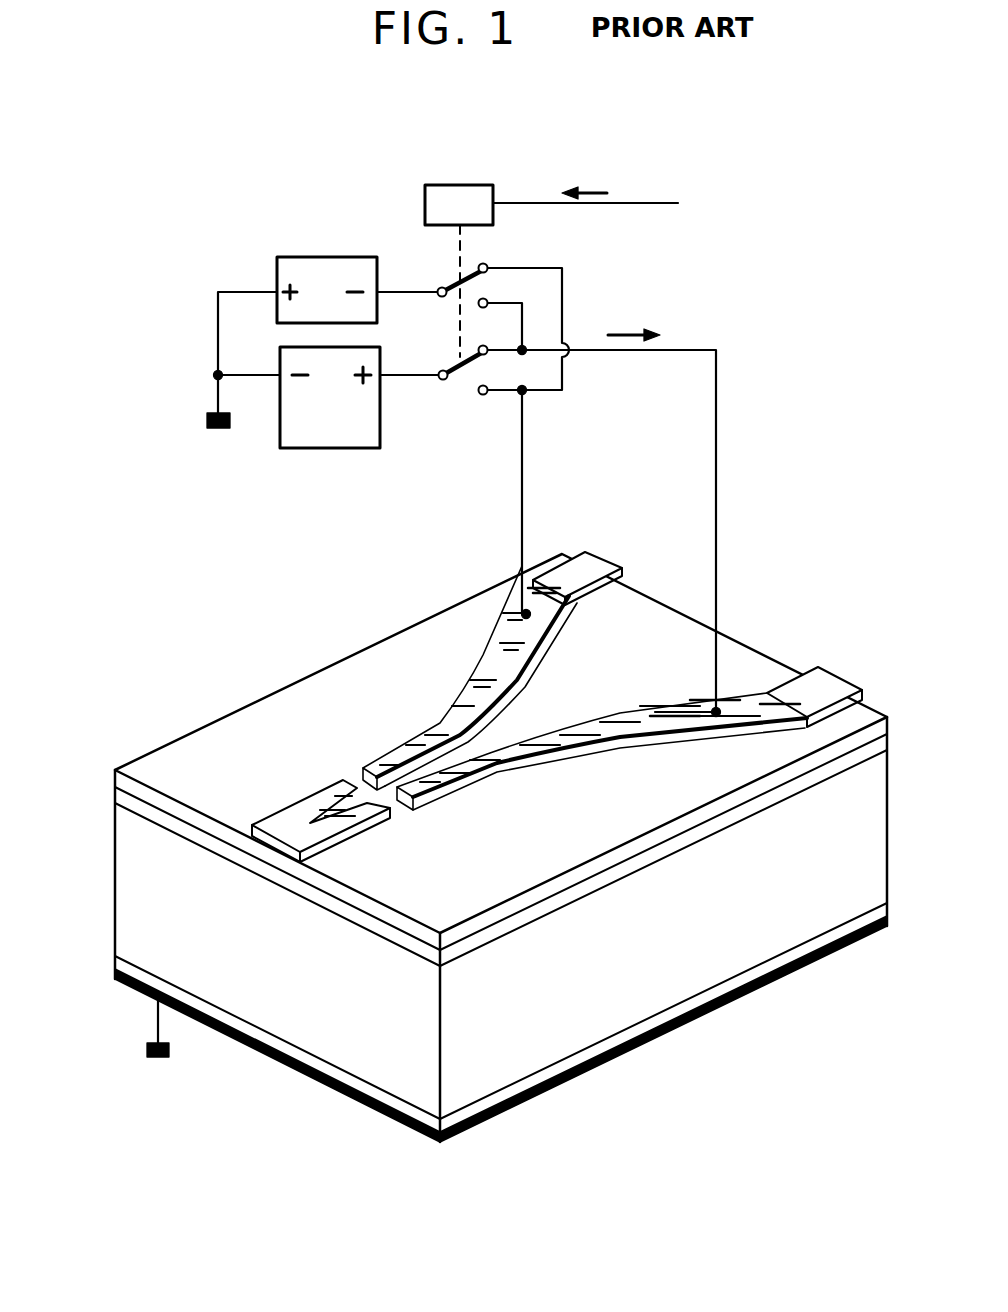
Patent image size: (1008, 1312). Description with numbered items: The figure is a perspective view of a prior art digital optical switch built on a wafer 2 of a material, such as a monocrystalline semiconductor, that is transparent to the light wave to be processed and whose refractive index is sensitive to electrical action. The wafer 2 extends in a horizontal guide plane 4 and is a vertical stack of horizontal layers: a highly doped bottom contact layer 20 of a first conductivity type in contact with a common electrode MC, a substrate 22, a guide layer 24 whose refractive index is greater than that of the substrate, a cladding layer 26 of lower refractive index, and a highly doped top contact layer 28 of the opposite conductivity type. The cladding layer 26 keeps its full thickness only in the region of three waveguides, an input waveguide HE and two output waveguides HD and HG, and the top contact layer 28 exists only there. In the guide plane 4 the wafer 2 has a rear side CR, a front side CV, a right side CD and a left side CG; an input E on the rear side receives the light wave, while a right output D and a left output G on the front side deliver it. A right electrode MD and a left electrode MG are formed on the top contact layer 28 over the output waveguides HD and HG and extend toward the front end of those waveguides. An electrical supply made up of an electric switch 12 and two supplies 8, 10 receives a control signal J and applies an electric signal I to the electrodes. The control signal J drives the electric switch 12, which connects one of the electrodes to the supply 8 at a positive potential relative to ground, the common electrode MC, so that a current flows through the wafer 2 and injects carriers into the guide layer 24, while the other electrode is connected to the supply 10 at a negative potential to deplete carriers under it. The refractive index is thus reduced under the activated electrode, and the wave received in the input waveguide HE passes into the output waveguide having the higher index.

The wafer 2 is at (113, 840).
The guide plane 4 is at (198, 758).
The supply 8 is at (320, 433).
The supply 10 is at (328, 270).
The electric switch 12 is at (463, 195).
The bottom contact layer 20 is at (660, 1027).
The substrate 22 is at (713, 950).
The guide layer 24 is at (525, 918).
The cladding layer 26 is at (583, 872).
The top contact layer 28 is at (333, 850).
The left output G is at (608, 562).
The right output D is at (840, 680).
The input E is at (275, 852).
The left electrode MG is at (490, 650).
The right electrode MD is at (737, 712).
The left output waveguide HG is at (466, 690).
The right output waveguide HD is at (640, 757).
The input waveguide HE is at (299, 800).
The left side CG is at (318, 668).
The right side CD is at (673, 822).
The rear side CR is at (197, 818).
The front side CV is at (741, 640).
The common electrode MC is at (580, 1075).
The electric signal I is at (634, 320).
The control signal J is at (585, 181).